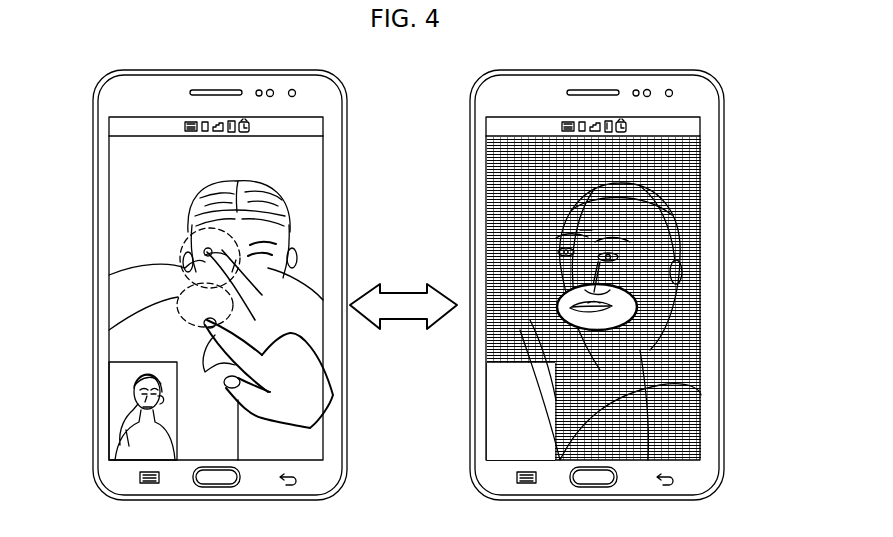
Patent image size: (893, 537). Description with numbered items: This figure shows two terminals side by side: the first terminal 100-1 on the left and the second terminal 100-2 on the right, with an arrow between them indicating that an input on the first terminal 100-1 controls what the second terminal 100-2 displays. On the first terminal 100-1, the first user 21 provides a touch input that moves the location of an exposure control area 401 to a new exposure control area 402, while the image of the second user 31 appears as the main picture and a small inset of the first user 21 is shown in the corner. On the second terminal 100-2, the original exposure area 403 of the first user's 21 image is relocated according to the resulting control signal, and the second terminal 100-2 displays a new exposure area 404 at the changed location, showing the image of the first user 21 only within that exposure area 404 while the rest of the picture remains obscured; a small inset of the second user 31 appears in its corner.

The first terminal 100-1 is at (273, 69).
The second terminal 100-2 is at (650, 69).
The first user 21 is at (127, 413).
The second user 31 is at (302, 440).
The exposure control area 401 is at (180, 255).
The exposure control area 402 is at (178, 308).
The exposure area 403 is at (680, 250).
The exposure area 404 is at (638, 302).